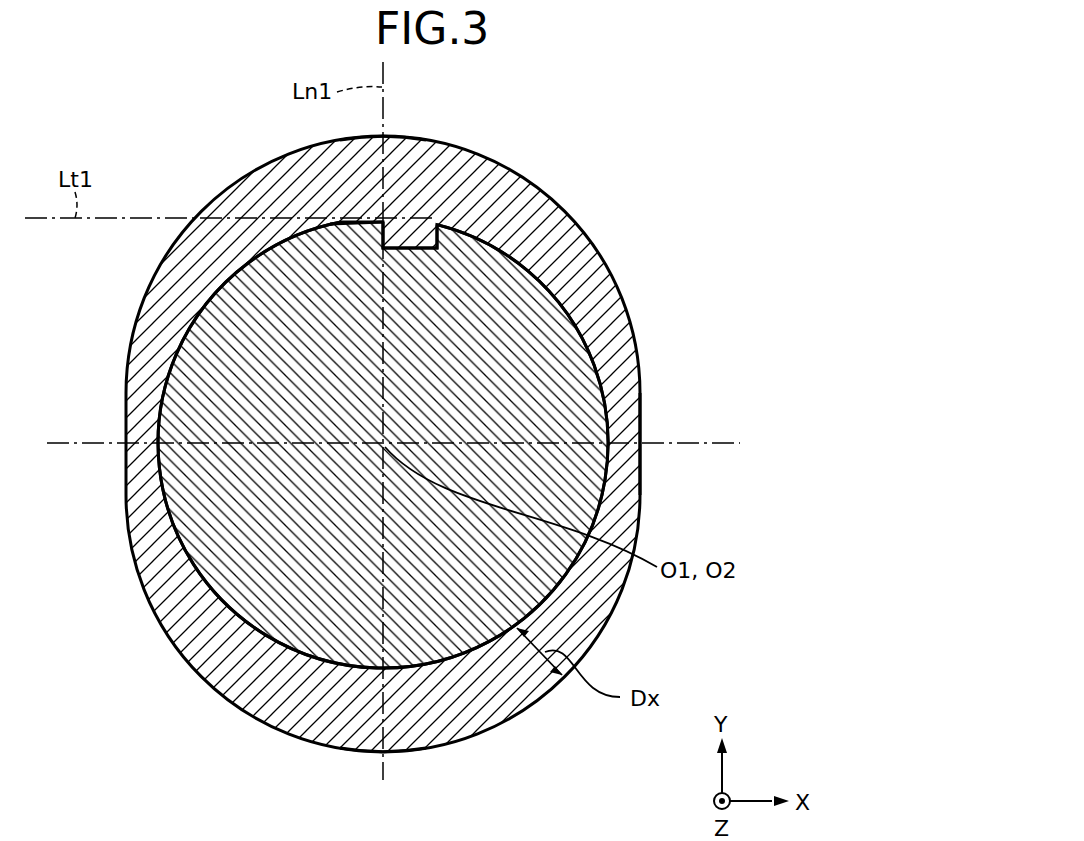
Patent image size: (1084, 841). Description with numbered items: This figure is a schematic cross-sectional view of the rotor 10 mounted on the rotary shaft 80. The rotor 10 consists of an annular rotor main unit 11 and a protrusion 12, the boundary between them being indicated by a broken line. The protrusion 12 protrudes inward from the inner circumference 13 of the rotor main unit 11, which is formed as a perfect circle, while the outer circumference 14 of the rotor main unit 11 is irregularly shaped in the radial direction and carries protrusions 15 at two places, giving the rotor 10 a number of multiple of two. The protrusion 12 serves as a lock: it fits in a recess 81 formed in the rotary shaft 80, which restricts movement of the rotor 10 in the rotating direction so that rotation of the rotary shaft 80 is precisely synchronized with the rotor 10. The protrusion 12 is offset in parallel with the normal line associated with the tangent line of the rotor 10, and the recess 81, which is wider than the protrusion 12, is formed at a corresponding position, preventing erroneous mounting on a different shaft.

The rotor 10 is at (630, 187).
The rotor main unit 11 is at (521, 242).
The protrusion 12 is at (438, 229).
The inner circumference 13 is at (590, 348).
The outer circumference 14 is at (640, 506).
The protrusions 15 is at (400, 137).
The rotary shaft 80 is at (217, 387).
The recess 81 is at (300, 231).